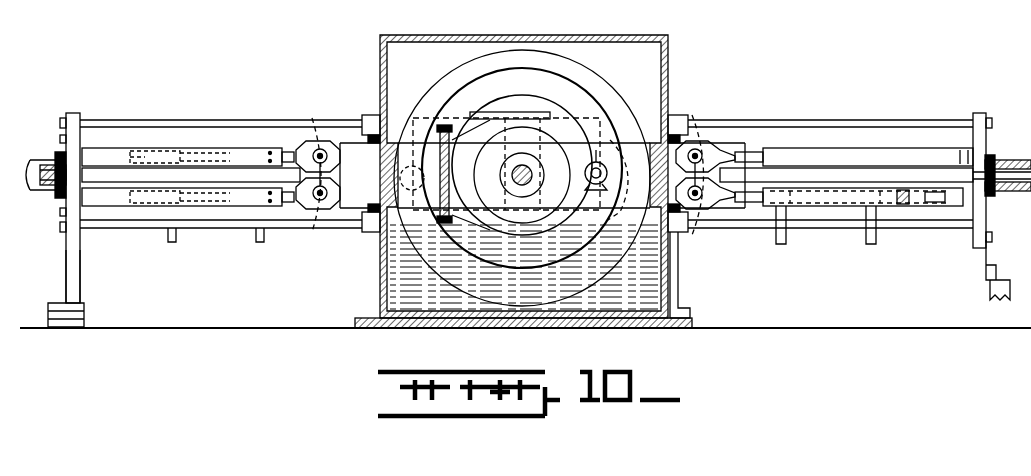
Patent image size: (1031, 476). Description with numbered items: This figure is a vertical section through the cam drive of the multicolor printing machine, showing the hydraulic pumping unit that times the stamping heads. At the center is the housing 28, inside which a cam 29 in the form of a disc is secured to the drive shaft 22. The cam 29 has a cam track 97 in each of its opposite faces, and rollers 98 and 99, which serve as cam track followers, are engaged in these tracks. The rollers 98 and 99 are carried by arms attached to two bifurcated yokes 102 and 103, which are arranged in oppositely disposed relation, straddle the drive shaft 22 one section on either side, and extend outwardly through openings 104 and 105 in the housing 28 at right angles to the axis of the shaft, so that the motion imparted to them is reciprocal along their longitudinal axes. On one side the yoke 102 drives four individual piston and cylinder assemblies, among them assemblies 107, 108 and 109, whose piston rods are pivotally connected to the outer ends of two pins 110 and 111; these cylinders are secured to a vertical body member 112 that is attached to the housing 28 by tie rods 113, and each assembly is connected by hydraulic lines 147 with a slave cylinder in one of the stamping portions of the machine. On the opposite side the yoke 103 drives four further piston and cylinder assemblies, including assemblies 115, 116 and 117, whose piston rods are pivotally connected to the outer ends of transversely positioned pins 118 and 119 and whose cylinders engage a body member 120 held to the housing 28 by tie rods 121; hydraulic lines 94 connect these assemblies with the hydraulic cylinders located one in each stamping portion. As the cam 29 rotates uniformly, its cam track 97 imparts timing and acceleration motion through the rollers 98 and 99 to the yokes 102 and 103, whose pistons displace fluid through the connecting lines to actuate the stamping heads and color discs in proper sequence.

The drive shaft 22 is at (522, 185).
The housing 28 is at (400, 278).
The cam 29 is at (522, 178).
The hydraulic lines 94 is at (782, 244).
The cam track 97 is at (538, 80).
The roller 98 is at (395, 190).
The roller 99 is at (604, 215).
The yoke 102 is at (575, 125).
The yoke 103 is at (450, 128).
The opening 104 is at (368, 116).
The opening 105 is at (680, 115).
The piston and cylinder assembly 107 is at (215, 148).
The piston and cylinder assembly 108 is at (205, 195).
The piston and cylinder assembly 109 is at (240, 195).
The pin 110 is at (325, 120).
The pin 111 is at (318, 228).
The vertical body member 112 is at (70, 113).
The tie rods 113 is at (200, 120).
The piston and cylinder assembly 115 is at (795, 150).
The piston and cylinder assembly 116 is at (928, 210).
The piston and cylinder assembly 117 is at (808, 228).
The pin 118 is at (700, 125).
The pin 119 is at (696, 236).
The body member 120 is at (978, 113).
The tie rods 121 is at (805, 120).
The hydraulic lines 147 is at (170, 242).